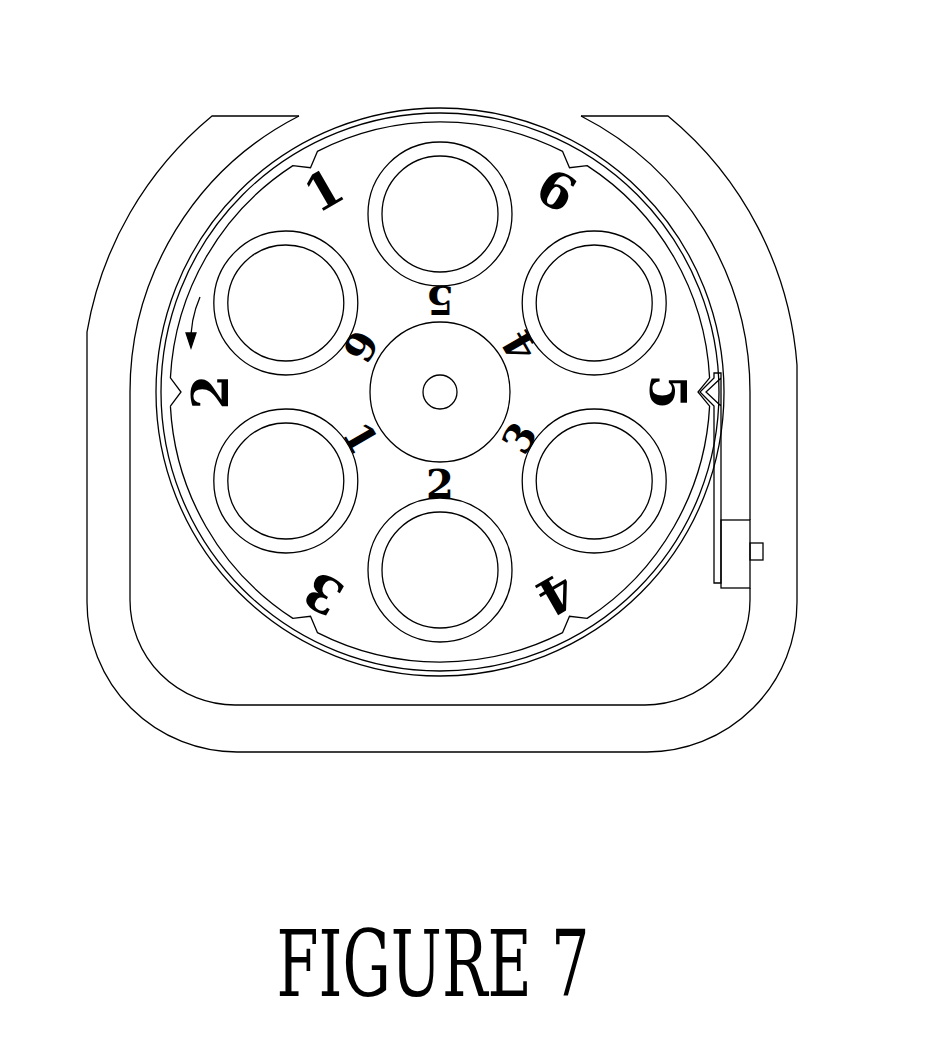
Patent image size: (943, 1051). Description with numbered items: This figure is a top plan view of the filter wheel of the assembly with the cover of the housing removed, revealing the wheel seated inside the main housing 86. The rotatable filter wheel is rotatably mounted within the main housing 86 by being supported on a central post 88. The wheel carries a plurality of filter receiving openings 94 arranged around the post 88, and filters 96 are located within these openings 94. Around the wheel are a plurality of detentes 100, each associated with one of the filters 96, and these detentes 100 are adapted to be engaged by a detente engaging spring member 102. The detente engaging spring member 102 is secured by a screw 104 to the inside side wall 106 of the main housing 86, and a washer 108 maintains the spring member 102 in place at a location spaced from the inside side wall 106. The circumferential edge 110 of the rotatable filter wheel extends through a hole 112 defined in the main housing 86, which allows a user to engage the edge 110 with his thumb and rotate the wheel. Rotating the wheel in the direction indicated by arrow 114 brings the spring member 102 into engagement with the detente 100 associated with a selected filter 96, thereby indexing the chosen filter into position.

The main housing 86 is at (718, 213).
The post 88 is at (440, 392).
The filter receiving openings 94 is at (421, 162).
The filters 96 is at (440, 212).
The detentes 100 is at (308, 165).
The detente engaging spring member 102 is at (722, 473).
The screw 104 is at (710, 530).
The inside side wall 106 is at (727, 658).
The washer 108 is at (737, 542).
The circumferential edge 110 is at (505, 108).
The hole 112 is at (265, 135).
The arrow 114 is at (195, 312).